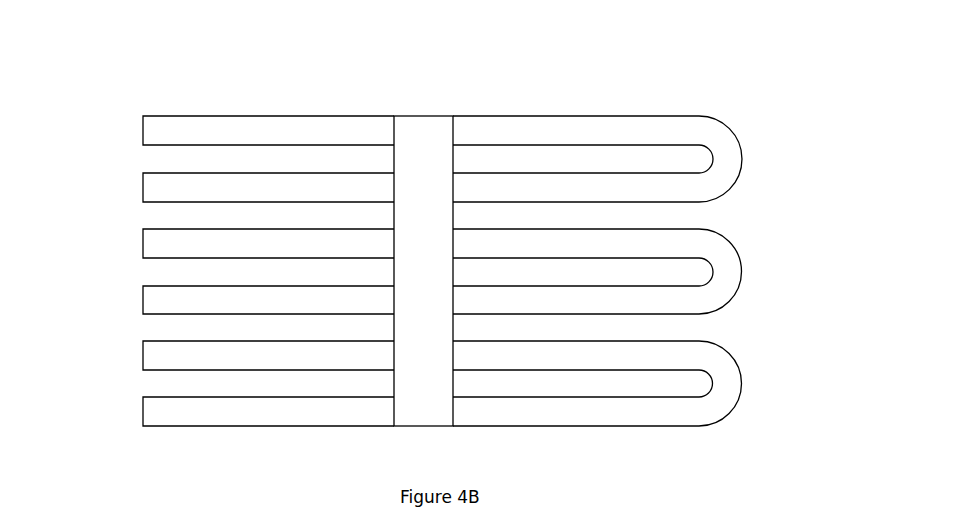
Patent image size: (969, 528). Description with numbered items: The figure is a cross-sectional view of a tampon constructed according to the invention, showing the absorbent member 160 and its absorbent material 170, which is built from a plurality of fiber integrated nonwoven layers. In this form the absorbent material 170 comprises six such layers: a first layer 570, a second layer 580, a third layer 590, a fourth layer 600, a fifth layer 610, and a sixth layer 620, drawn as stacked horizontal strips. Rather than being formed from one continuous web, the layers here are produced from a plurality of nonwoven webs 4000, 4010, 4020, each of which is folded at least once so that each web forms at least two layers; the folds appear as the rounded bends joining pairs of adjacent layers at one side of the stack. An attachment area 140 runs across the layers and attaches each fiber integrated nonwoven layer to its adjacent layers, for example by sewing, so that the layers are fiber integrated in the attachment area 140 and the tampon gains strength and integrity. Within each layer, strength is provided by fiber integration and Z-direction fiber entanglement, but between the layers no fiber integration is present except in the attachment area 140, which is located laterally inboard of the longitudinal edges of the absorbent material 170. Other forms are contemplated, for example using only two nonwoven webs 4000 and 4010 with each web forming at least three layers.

The attachment area 140 is at (422, 143).
The absorbent member 160 is at (677, 75).
The absorbent material 170 is at (117, 138).
The nonwoven web 4000 is at (295, 137).
The nonwoven web 4010 is at (155, 245).
The nonwoven web 4020 is at (155, 363).
The first layer 570 is at (642, 131).
The second layer 580 is at (642, 192).
The third layer 590 is at (643, 248).
The fourth layer 600 is at (645, 302).
The fifth layer 610 is at (643, 358).
The sixth layer 620 is at (643, 414).